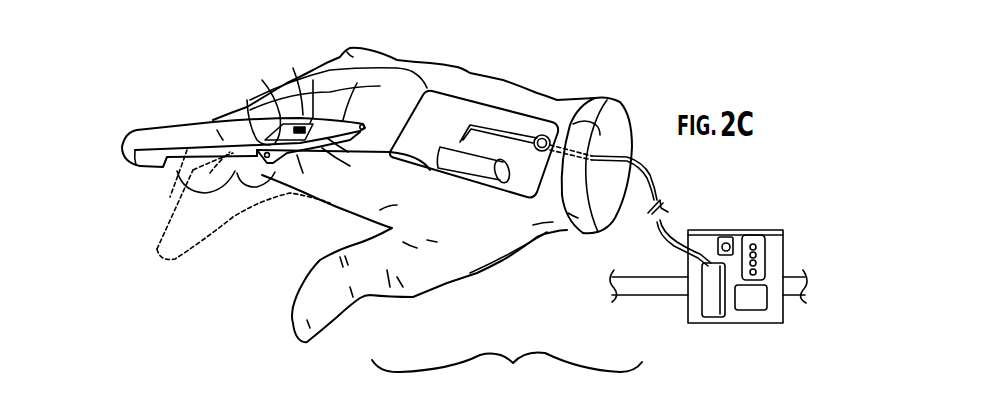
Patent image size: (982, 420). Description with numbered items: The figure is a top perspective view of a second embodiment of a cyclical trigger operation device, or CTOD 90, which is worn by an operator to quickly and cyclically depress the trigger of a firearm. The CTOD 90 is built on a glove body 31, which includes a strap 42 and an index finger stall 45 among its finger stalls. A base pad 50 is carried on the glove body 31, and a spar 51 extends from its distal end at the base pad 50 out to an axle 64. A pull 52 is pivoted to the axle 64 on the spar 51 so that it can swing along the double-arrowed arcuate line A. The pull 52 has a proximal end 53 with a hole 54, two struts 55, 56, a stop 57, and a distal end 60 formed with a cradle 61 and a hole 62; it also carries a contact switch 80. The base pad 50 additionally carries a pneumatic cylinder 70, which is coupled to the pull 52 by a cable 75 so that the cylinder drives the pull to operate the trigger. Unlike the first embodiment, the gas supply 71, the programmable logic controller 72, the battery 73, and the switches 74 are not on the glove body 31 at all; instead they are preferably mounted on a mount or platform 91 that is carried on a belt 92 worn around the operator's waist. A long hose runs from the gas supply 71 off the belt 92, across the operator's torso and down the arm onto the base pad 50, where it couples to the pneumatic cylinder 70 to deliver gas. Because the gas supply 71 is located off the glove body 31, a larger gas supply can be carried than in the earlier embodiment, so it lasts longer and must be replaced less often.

The glove body 31 is at (470, 73).
The strap 42 is at (570, 213).
The index finger stall 45 is at (215, 122).
The base pad 50 is at (520, 117).
The spar 51 is at (353, 158).
The pull 52 is at (313, 80).
The proximal end 53 is at (357, 83).
The hole 54 is at (365, 126).
The strut 55 is at (262, 92).
The strut 56 is at (240, 160).
The stop 57 is at (298, 160).
The distal end 60 is at (137, 130).
The cradle 61 is at (148, 167).
The hole 62 is at (133, 165).
The axle 64 is at (263, 138).
The pneumatic cylinder 70 is at (463, 177).
The gas supply 71 is at (715, 317).
The programmable logic controller 72 is at (753, 310).
The battery 73 is at (727, 237).
The switches 74 is at (753, 235).
The cable 75 is at (408, 150).
The contact switch 80 is at (164, 168).
The cyclical trigger operation device 90 is at (507, 376).
The mount or platform 91 is at (785, 238).
The belt 92 is at (635, 295).
The double-arrowed arcuate line A is at (155, 245).